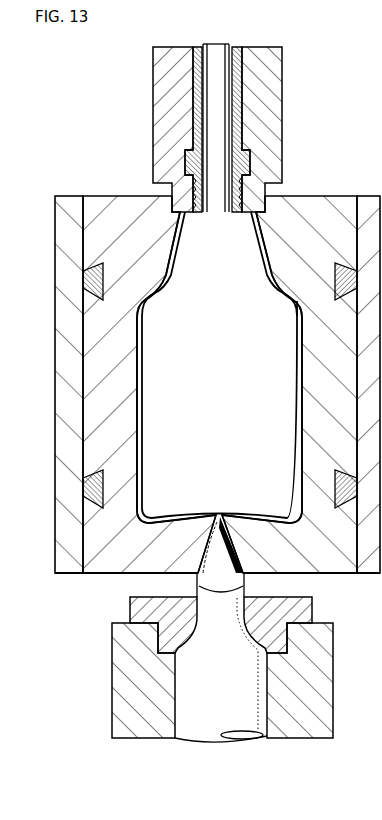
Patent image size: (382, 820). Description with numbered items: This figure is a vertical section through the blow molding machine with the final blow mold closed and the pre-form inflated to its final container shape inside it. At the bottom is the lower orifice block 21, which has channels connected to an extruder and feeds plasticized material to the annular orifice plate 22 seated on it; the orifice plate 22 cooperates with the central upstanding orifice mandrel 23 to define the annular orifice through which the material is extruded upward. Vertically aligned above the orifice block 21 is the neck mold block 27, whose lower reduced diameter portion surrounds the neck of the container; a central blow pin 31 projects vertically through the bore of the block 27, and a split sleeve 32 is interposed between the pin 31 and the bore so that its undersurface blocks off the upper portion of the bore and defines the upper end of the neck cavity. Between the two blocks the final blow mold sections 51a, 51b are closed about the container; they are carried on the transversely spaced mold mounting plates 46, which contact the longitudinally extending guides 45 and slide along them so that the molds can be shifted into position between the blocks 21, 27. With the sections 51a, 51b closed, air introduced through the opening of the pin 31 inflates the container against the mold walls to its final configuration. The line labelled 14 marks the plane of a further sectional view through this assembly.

The section line 14- 14 is at (218, 214).
The lower orifice block 21 is at (315, 700).
The annular orifice plate 22 is at (305, 609).
The orifice mandrel 23 is at (235, 742).
The neck mold block 27 is at (270, 110).
The blow pin 31 is at (207, 91).
The split sleeve 32 is at (238, 47).
The guide 45 is at (90, 285).
The mold mounting plate 46 is at (58, 227).
The final blow mold section 51a is at (335, 202).
The final blow mold section 51b is at (106, 202).